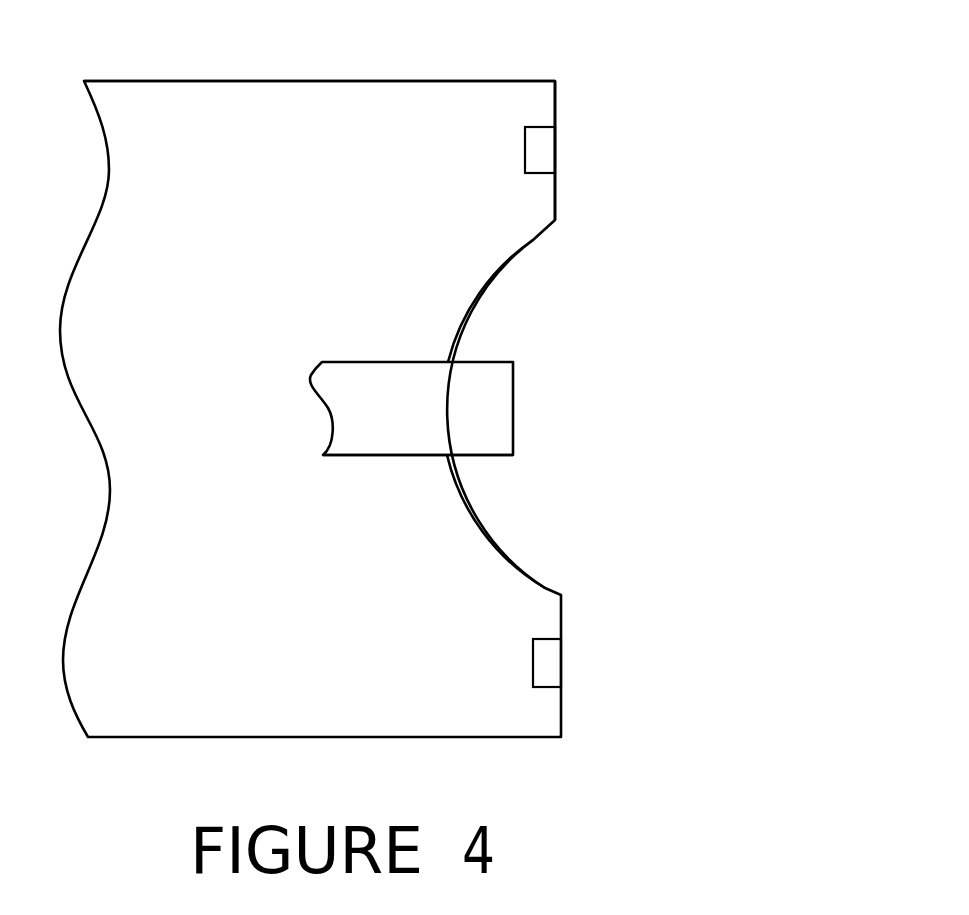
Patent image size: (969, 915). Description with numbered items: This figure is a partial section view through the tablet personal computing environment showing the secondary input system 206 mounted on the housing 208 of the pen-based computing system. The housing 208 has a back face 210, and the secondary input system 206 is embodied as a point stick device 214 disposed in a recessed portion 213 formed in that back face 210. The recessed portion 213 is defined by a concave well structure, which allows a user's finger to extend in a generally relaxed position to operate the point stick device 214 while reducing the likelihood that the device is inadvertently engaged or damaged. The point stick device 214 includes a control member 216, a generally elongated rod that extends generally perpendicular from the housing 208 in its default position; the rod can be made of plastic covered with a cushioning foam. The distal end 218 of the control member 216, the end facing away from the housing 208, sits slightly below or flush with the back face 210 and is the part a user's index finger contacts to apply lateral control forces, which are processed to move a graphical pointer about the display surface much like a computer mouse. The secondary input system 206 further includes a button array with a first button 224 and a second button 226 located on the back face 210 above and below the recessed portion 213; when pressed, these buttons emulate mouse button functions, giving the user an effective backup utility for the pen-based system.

The secondary input system 206 is at (745, 189).
The housing 208 is at (445, 80).
The back face 210 is at (555, 100).
The recessed portion 213 is at (503, 543).
The point stick device 214 is at (481, 361).
The control member 216 is at (360, 456).
The distal end 218 is at (513, 403).
The first button 224 is at (555, 158).
The second button 226 is at (561, 662).